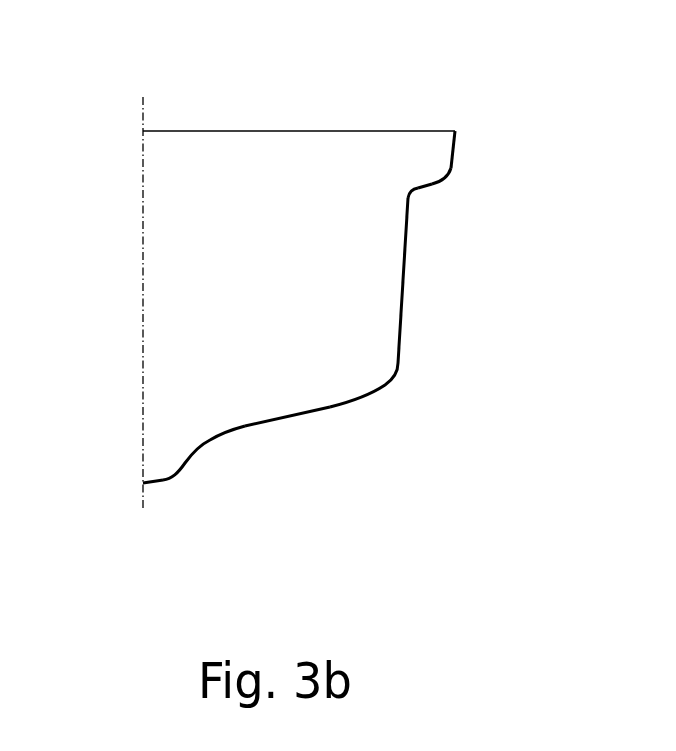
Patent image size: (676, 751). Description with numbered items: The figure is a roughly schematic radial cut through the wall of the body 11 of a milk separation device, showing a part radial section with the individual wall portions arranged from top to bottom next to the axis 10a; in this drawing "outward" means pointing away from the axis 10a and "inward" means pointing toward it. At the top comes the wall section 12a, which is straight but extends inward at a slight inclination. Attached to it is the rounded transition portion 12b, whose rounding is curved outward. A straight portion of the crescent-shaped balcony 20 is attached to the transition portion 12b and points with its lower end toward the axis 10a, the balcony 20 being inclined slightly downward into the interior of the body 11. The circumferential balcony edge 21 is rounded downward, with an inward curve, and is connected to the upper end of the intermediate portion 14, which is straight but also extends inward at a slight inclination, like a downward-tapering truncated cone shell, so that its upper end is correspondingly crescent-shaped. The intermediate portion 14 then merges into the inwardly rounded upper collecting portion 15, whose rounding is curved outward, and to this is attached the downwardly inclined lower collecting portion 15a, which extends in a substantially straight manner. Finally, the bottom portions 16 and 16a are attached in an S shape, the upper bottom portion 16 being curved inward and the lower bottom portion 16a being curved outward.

The axis 10a is at (143, 121).
The body 11 is at (110, 275).
The wall section 12a is at (457, 150).
The transition portion 12b is at (448, 172).
The balcony 20 is at (430, 183).
The balcony edge 21 is at (413, 193).
The intermediate portion 14 is at (407, 260).
The upper collecting portion 15 is at (398, 377).
The lower collecting portion 15a is at (343, 405).
The upper bottom portion 16 is at (205, 447).
The lower bottom portion 16a is at (167, 480).